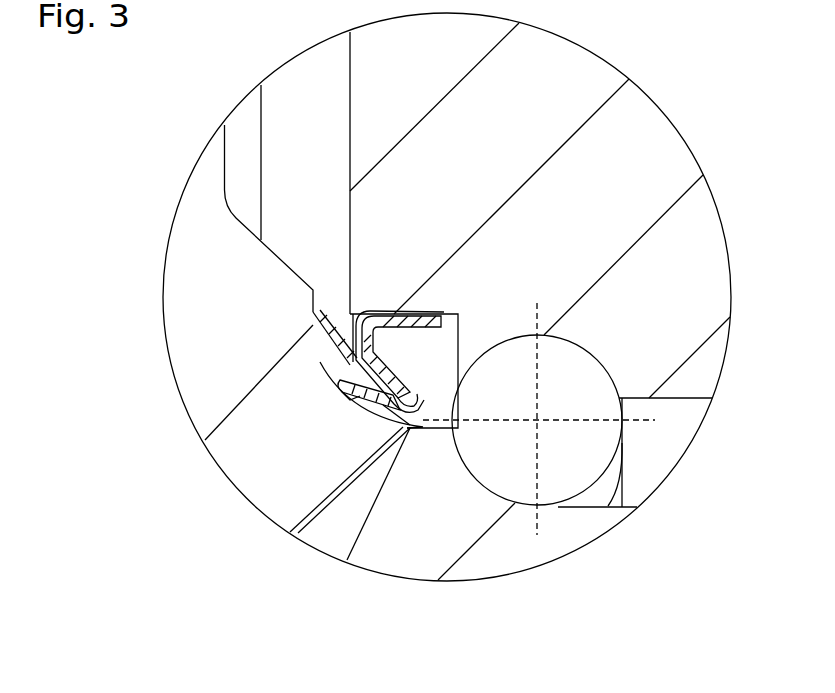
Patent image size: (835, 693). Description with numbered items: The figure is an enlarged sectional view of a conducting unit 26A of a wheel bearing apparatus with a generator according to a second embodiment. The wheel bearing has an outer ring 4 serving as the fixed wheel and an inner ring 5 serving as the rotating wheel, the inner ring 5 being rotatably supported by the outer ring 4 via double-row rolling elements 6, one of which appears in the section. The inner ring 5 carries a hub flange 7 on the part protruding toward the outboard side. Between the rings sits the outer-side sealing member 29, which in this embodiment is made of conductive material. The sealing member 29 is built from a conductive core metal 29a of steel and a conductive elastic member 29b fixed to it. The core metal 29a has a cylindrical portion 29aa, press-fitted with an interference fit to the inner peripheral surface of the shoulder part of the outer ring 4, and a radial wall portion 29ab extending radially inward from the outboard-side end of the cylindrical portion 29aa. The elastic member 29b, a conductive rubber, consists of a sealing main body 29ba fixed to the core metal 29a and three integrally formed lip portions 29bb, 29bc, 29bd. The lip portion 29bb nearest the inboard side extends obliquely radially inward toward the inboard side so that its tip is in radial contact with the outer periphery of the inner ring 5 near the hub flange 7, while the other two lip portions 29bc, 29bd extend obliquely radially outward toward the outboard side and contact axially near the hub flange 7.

The outer ring 4 is at (650, 176).
The inner ring 5 is at (226, 431).
The double-row rolling elements 6 is at (582, 442).
The hub flange 7 is at (222, 180).
The conducting unit 26A is at (290, 532).
The outer-side sealing member 29 is at (90, 200).
The core metal 29a is at (285, 307).
The cylindrical portion 29aa is at (415, 316).
The radial wall portion 29ab is at (483, 351).
The elastic member 29b is at (255, 437).
The sealing main body 29ba is at (336, 378).
The lip portion 29bb is at (392, 420).
The lip portion 29bc is at (350, 398).
The lip portion 29bd is at (345, 336).